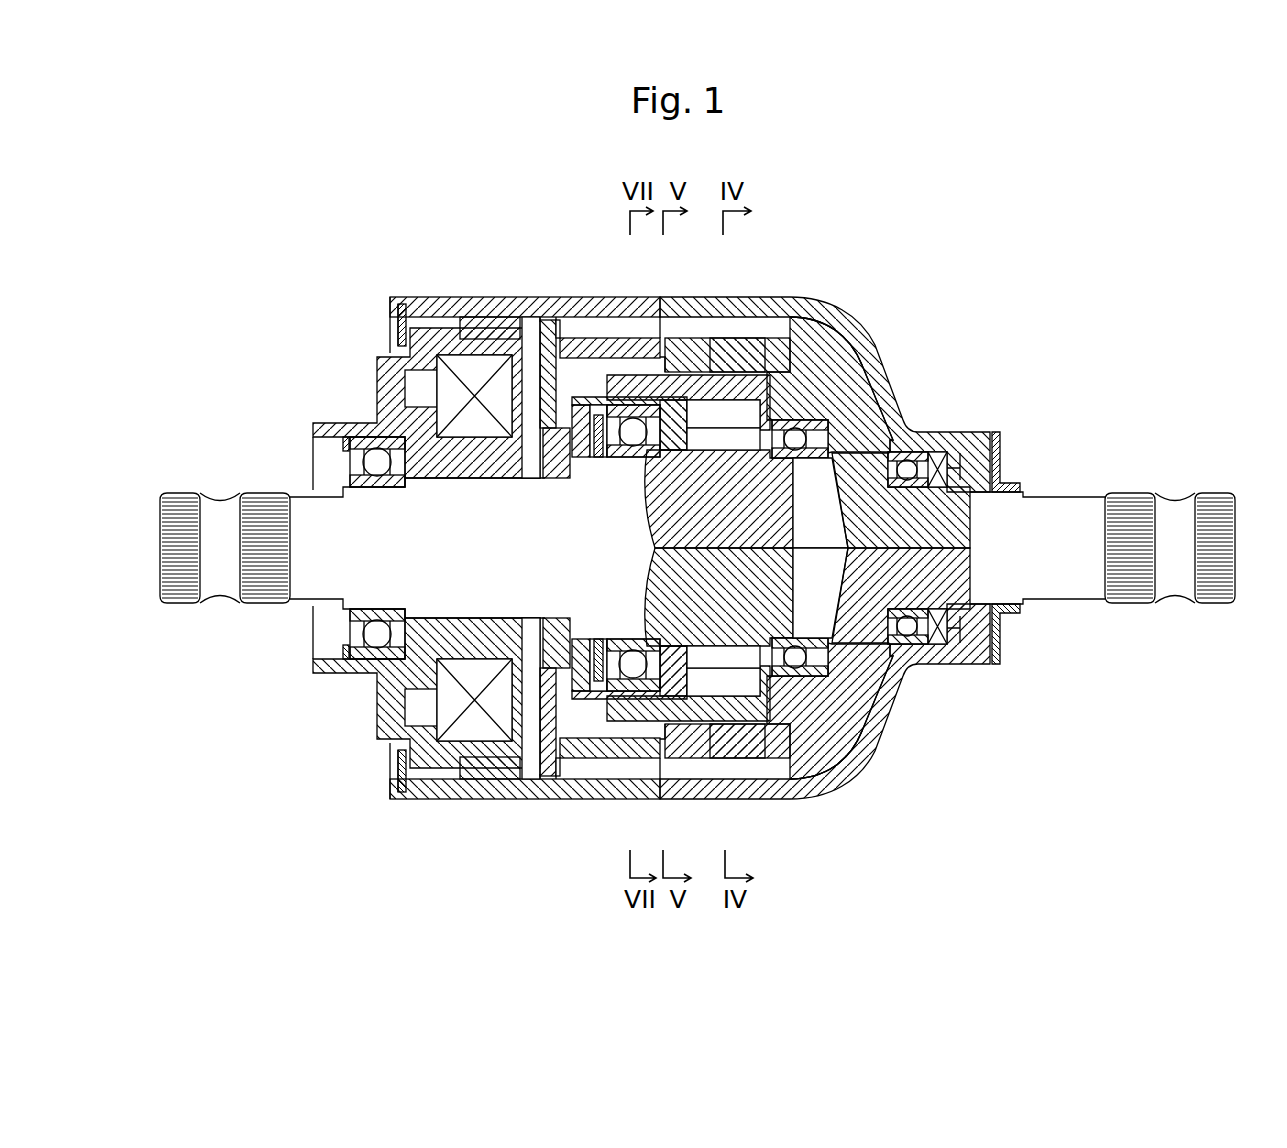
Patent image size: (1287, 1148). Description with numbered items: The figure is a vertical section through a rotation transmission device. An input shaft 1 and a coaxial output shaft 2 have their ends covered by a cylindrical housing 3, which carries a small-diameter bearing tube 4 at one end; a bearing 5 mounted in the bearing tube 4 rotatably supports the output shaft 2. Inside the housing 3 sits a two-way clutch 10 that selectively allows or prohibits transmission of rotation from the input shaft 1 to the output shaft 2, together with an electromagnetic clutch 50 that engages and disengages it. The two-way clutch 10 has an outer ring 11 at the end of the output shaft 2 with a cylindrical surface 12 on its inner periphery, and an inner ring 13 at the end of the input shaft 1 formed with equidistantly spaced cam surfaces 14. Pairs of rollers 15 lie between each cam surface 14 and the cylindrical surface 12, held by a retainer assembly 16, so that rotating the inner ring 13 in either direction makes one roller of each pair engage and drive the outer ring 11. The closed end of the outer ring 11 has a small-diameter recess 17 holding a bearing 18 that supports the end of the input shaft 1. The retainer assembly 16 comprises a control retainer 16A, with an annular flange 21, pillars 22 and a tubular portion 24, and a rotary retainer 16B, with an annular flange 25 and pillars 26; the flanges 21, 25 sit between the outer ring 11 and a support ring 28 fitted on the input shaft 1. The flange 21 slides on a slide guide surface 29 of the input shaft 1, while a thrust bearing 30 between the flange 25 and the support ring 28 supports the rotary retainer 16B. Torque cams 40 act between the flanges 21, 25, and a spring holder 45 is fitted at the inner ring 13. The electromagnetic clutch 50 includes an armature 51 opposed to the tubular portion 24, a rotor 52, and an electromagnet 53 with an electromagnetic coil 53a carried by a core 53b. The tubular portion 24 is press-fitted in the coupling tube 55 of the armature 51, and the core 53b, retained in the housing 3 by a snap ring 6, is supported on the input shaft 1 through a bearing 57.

The input shaft 1 is at (218, 494).
The output shaft 2 is at (1066, 496).
The housing 3 is at (413, 298).
The bearing tube 4 is at (978, 440).
The bearing 5 is at (920, 452).
The snap ring 6 is at (400, 330).
The two-way clutch 10 is at (822, 328).
The outer ring 11 is at (772, 338).
The cylindrical surface 12 is at (738, 345).
The inner ring 13 is at (790, 425).
The cam surfaces 14 is at (836, 360).
The rollers 15 is at (821, 333).
The retainer assembly 16 is at (634, 324).
The control retainer 16A is at (663, 326).
The rotary retainer 16B is at (600, 360).
The small-diameter recess 17 is at (795, 652).
The bearing 18 is at (800, 672).
The annular flange 21 is at (645, 640).
The pillars 22 is at (742, 700).
The tubular portion 24 is at (601, 336).
The annular flange 25 is at (612, 458).
The pillars 26 is at (720, 378).
The support ring 28 is at (556, 470).
The slide guide surface 29 is at (590, 458).
The thrust bearing 30 is at (562, 622).
The torque cams 40 is at (636, 450).
The spring holder 45 is at (680, 690).
The electromagnetic clutch 50 is at (470, 305).
The armature 51 is at (547, 368).
The rotor 52 is at (530, 345).
The electromagnet 53 is at (366, 367).
The electromagnetic coil 53a is at (442, 393).
The core 53b is at (412, 330).
The coupling tube 55 is at (555, 775).
The bearing 57 is at (360, 632).